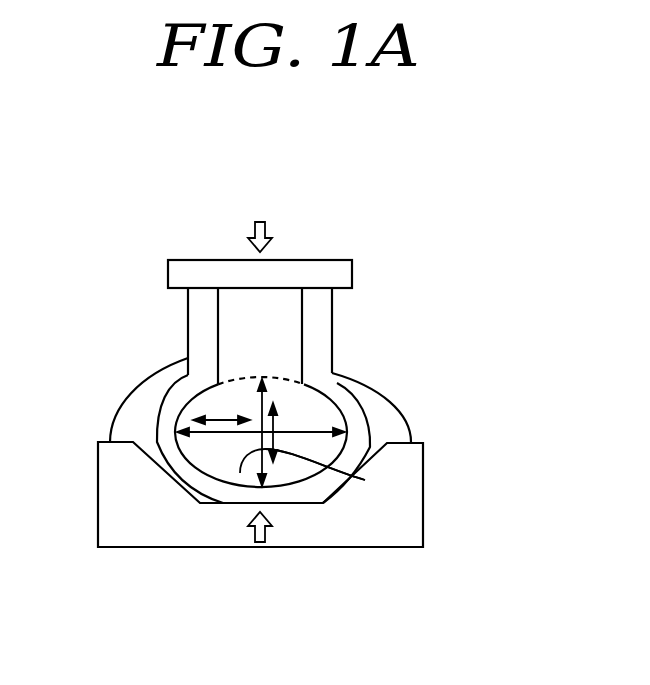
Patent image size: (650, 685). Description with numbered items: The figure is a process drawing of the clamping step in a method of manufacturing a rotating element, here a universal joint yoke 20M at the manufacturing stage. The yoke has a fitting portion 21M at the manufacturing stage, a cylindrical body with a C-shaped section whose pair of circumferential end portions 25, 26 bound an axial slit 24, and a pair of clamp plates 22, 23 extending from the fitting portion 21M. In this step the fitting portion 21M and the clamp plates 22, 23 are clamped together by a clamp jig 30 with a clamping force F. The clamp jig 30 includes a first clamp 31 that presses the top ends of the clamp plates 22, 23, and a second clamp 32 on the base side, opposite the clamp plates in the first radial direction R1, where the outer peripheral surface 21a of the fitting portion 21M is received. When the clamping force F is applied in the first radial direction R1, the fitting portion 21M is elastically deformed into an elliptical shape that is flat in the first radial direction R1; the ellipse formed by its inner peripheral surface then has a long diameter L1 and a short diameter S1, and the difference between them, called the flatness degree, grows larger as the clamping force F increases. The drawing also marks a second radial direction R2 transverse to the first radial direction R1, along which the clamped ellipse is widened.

The universal joint yoke at the manufacturing stage 20M is at (400, 379).
The fitting portion at the manufacturing stage 21M is at (357, 411).
The outer peripheral surface 21a is at (322, 497).
The clamp plate 22 is at (201, 307).
The clamp plate 23 is at (322, 308).
The axial slit 24 is at (243, 367).
The circumferential end portion 25 is at (188, 380).
The circumferential end portion 26 is at (338, 395).
The clamp jig 30 is at (358, 270).
The first clamp 31 is at (312, 270).
The second clamp 32 is at (415, 514).
The long diameter L1 is at (205, 432).
The first radial direction R1 is at (336, 474).
The radius of curvature R2 is at (218, 414).
The short diameter S1 is at (240, 473).
The clamping force F is at (250, 233).